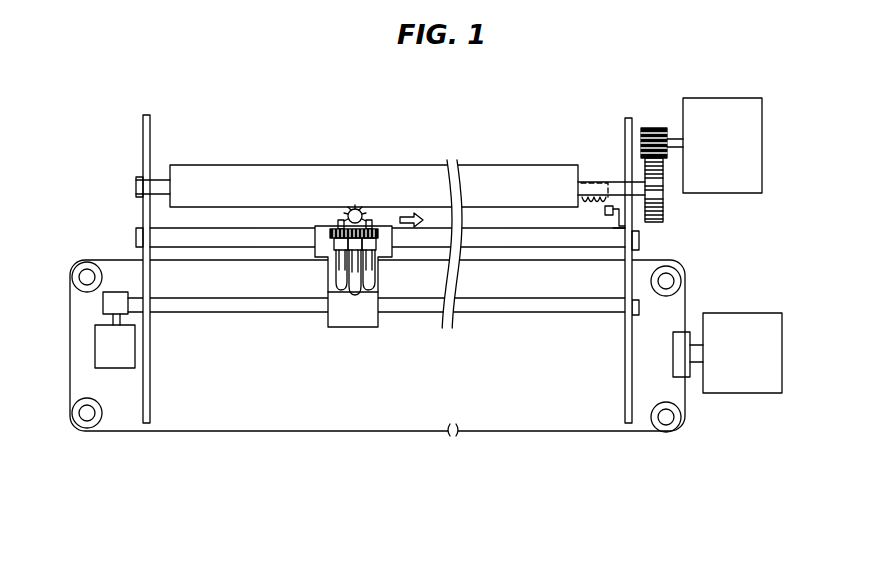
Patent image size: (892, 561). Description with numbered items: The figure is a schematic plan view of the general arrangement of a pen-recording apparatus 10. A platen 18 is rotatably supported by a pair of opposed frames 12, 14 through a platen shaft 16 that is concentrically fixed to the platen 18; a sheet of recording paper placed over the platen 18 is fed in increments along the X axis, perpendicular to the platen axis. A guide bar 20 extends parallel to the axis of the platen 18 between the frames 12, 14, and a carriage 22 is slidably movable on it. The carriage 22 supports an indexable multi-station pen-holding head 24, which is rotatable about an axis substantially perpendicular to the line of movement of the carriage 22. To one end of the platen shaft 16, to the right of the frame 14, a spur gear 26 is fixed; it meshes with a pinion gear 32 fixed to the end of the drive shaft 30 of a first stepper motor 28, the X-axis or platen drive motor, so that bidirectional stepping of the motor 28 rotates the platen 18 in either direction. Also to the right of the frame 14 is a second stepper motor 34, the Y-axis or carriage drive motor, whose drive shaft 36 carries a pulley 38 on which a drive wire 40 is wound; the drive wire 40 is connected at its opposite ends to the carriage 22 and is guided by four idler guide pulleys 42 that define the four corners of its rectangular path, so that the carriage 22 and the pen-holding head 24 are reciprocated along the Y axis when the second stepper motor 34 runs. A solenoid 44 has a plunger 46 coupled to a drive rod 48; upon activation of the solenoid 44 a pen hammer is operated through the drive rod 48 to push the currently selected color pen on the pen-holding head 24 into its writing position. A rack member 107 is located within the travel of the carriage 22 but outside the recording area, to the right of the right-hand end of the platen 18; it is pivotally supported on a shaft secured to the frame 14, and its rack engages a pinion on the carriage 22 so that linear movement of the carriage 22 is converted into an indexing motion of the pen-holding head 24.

The pen-recording apparatus 10 is at (290, 104).
The frame 12 is at (143, 140).
The frame 14 is at (625, 148).
The platen shaft 16 is at (158, 180).
The platen 18 is at (362, 178).
The guide bar 20 is at (212, 237).
The carriage 22 is at (351, 342).
The pen-holding head 24 is at (352, 268).
The spur gear 26 is at (663, 200).
The first stepper motor 28 is at (737, 108).
The drive shaft 30 is at (674, 140).
The pinion gear 32 is at (652, 128).
The second stepper motor 34 is at (765, 388).
The drive shaft 36 is at (697, 365).
The pulley 38 is at (674, 352).
The drive wire 40 is at (497, 433).
The idler guide pulleys 42 is at (84, 263).
The solenoid 44 is at (105, 357).
The plunger 46 is at (112, 321).
The drive rod 48 is at (183, 305).
The rack member 107 is at (588, 218).